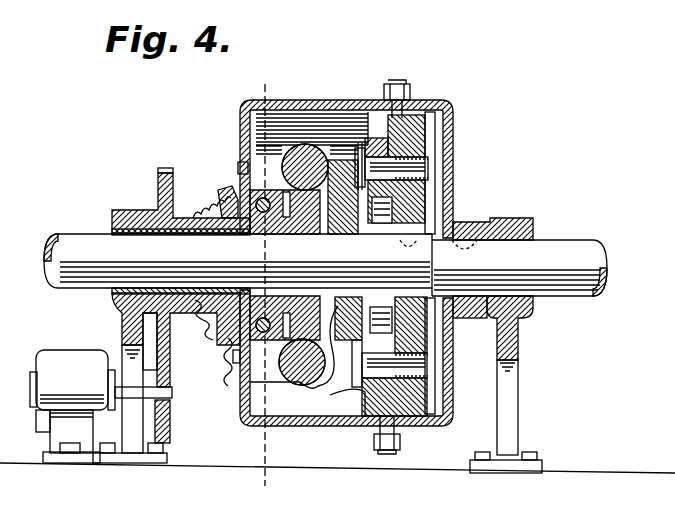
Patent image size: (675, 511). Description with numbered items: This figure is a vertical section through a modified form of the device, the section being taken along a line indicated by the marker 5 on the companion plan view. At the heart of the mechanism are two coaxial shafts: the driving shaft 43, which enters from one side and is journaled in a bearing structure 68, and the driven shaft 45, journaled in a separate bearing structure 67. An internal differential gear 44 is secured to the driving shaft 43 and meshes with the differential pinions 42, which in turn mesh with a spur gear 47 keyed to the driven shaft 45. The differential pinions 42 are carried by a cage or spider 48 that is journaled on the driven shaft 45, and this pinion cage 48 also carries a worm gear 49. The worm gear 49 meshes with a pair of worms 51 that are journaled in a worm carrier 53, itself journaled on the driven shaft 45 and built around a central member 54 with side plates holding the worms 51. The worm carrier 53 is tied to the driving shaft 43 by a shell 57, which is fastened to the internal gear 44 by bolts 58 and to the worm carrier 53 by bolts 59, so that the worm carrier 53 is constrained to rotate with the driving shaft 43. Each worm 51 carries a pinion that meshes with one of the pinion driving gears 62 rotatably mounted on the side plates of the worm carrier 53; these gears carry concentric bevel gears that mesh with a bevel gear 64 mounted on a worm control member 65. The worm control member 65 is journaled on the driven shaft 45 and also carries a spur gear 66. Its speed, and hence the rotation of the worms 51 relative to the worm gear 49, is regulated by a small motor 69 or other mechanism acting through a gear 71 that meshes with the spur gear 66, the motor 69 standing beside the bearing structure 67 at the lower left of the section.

The section line 5- 5 is at (265, 83).
The differential pinions 42 is at (455, 129).
The driving shaft 43 is at (558, 253).
The internal differential gear 44 is at (429, 112).
The driven shaft 45 is at (70, 243).
The spur gear 47 is at (455, 206).
The cage or spider 48 is at (378, 396).
The worm gear 49 is at (333, 346).
The worms 51 is at (309, 145).
The worm carrier 53 is at (211, 216).
The central member 54 is at (237, 364).
The shell 57 is at (346, 108).
The bolts 58 is at (410, 95).
The bolts 59 is at (240, 163).
The pinion driving gears 62 is at (228, 339).
The bevel gear 64 is at (226, 189).
The worm control member 65 is at (204, 313).
The spur gear 66 is at (158, 181).
The bearing structure 67 is at (113, 299).
The bearing structure 68 is at (516, 417).
The small motor 69 is at (60, 360).
The gear 71 is at (170, 422).